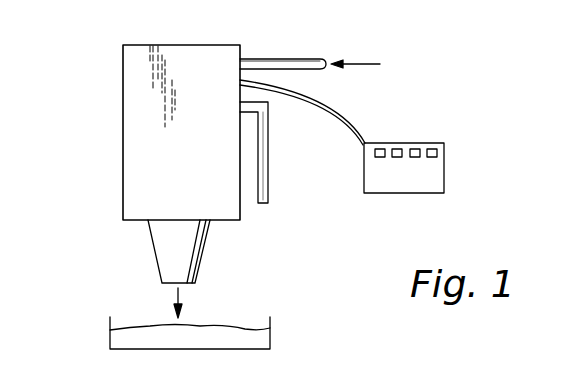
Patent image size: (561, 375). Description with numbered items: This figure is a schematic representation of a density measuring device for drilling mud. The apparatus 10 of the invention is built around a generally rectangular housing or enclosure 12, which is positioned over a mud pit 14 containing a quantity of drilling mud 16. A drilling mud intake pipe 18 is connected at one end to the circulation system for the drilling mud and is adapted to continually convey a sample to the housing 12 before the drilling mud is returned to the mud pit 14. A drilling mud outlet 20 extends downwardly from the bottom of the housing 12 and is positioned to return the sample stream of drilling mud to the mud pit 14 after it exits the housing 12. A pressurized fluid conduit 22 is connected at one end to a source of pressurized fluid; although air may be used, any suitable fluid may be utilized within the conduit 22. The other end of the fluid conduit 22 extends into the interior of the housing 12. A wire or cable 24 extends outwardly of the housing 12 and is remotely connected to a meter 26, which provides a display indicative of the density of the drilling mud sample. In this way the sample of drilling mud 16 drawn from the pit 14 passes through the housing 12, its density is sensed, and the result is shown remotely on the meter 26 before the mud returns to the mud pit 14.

The apparatus 10 is at (118, 131).
The housing 12 is at (128, 98).
The mud pit 14 is at (112, 338).
The drilling mud 16 is at (240, 333).
The drilling mud intake pipe 18 is at (268, 178).
The drilling mud outlet 20 is at (160, 250).
The pressurized fluid conduit 22 is at (292, 59).
The wire or cable 24 is at (345, 111).
The meter 26 is at (440, 170).